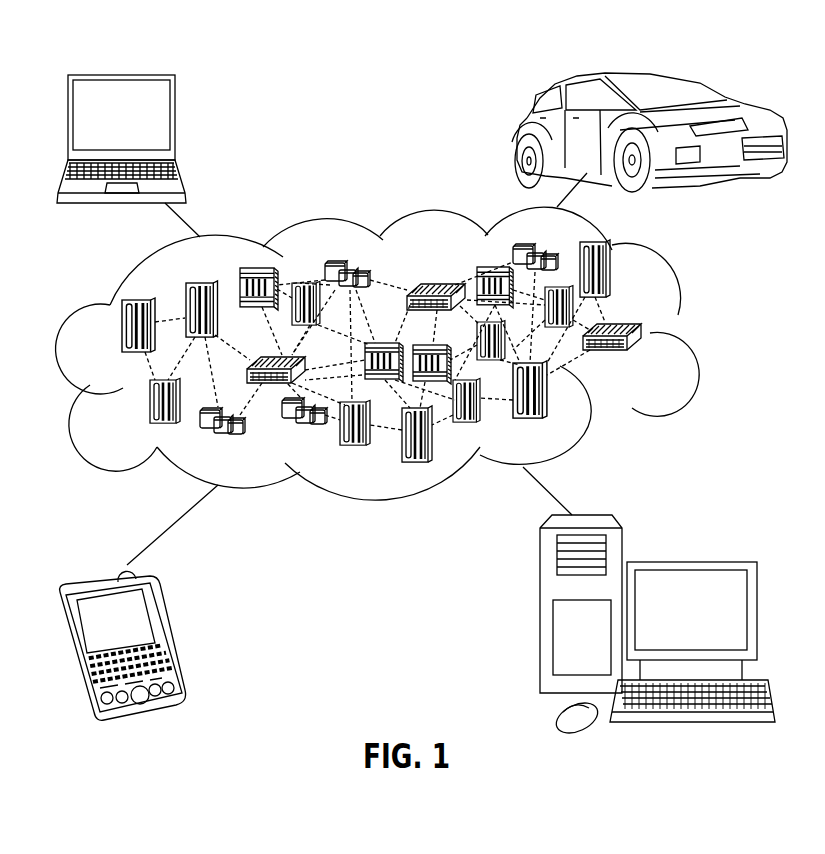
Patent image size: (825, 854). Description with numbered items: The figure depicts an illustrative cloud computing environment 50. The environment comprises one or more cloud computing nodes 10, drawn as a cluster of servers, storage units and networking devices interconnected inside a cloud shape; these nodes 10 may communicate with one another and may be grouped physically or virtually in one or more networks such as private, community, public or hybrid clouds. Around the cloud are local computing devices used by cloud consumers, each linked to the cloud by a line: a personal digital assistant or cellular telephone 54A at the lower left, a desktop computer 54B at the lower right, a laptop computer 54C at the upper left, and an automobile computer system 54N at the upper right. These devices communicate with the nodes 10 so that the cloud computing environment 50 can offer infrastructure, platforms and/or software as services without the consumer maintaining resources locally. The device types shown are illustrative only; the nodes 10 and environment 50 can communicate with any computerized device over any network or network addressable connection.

The cloud computing node 10 is at (650, 361).
The cloud computing environment 50 is at (395, 353).
The personal digital assistant or cellular telephone 54A is at (167, 632).
The desktop computer 54B is at (688, 562).
The laptop computer 54C is at (178, 125).
The automobile computer system 54N is at (519, 135).